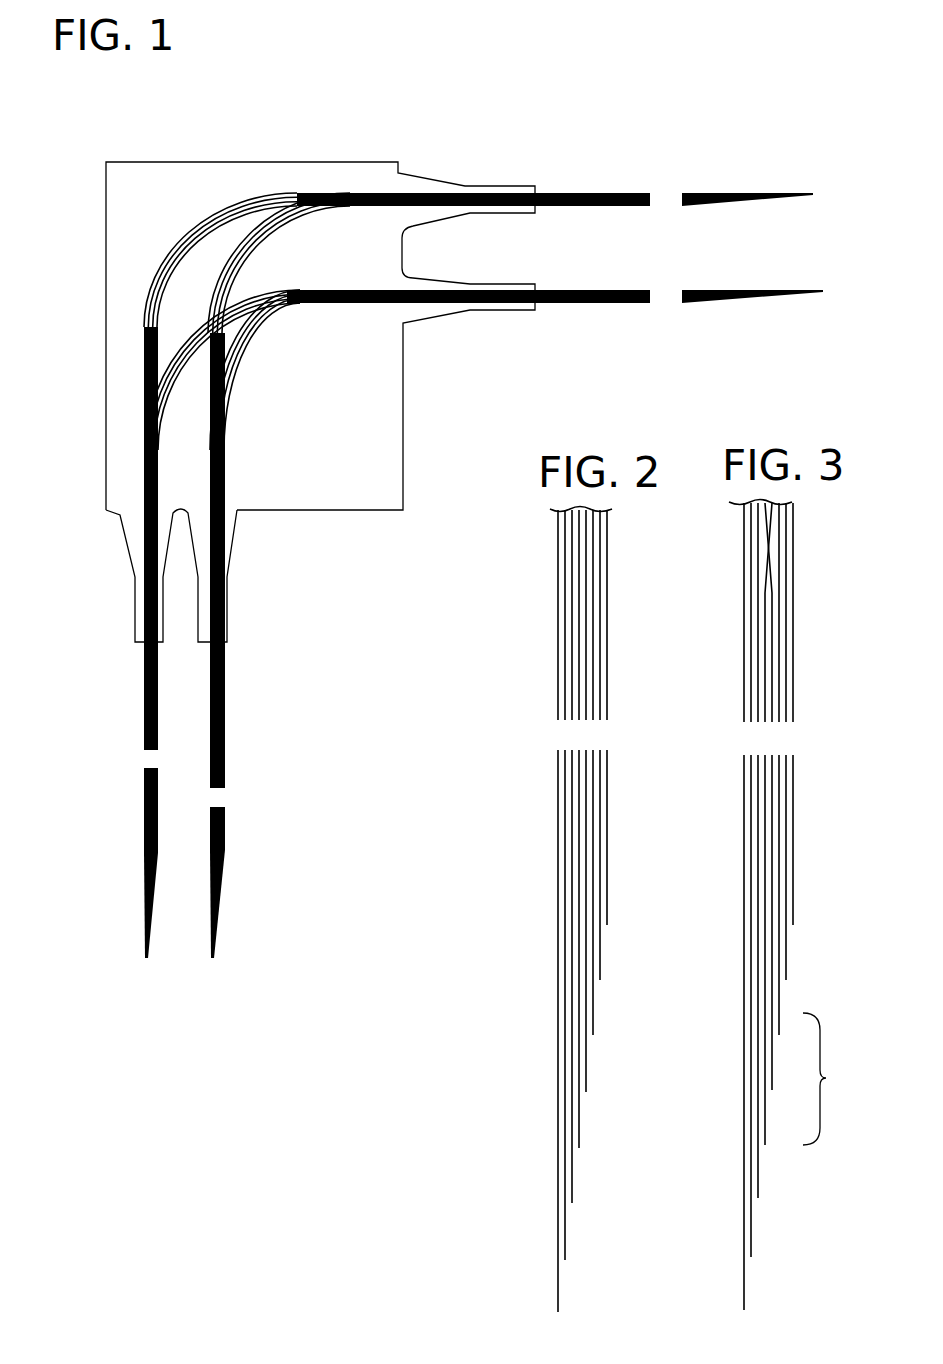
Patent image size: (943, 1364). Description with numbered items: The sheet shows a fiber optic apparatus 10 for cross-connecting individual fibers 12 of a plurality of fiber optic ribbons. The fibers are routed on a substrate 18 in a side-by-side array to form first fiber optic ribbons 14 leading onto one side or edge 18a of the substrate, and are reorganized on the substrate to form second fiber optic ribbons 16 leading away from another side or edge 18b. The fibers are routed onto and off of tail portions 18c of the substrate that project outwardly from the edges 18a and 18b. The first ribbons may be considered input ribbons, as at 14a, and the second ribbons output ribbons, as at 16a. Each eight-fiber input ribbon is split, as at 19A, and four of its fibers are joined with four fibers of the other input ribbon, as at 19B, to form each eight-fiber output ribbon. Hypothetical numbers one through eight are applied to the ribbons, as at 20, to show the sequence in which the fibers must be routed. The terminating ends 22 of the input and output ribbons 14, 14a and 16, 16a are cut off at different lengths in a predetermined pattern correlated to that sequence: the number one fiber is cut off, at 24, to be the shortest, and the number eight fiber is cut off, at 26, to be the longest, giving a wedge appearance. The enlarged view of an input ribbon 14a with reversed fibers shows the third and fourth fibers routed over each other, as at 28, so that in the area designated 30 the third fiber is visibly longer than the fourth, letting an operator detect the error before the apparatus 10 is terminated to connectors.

In FIG. 1, the fiber optic apparatus 10 is at (240, 136).
In FIG. 1, the individual fibers 12 is at (238, 262).
In FIG. 2, the individual fibers 12 is at (588, 590).
In FIG. 3, the individual fibers 12 is at (768, 503).
In FIG. 1, the first fiber optic ribbons 14 is at (207, 543).
In FIG. 1, the input ribbons 14a is at (208, 700).
In FIG. 2, the input ribbons 14a is at (604, 625).
In FIG. 3, the input ribbons 14a is at (788, 540).
In FIG. 1, the second fiber optic ribbons 16 is at (427, 293).
In FIG. 1, the output ribbons 16a is at (587, 290).
In FIG. 1, the substrate 18 is at (357, 462).
In FIG. 1, the side or edge of the substrate 18a is at (303, 512).
In FIG. 1, the another side or edge of the substrate 18b is at (405, 430).
In FIG. 1, the tail portions of the substrate 18c is at (479, 186).
In FIG. 1, the split of the input ribbons 19A is at (142, 453).
In FIG. 1, the joining of ribbon halves 19B is at (323, 297).
In FIG. 1, the hypothetical fiber numbers 20 is at (660, 160).
In FIG. 2, the hypothetical fiber numbers 20 is at (535, 733).
In FIG. 3, the hypothetical fiber numbers 20 is at (820, 742).
In FIG. 1, the terminating ends 22 is at (762, 203).
In FIG. 2, the terminating ends 22 is at (590, 1158).
In FIG. 3, the terminating ends 22 is at (768, 1207).
In FIG. 2, the cut-off of the number one fiber 24 is at (607, 925).
In FIG. 3, the cut-off of the number one fiber 24 is at (793, 925).
In FIG. 2, the cut-off of the number eight fiber 26 is at (558, 1312).
In FIG. 3, the cut-off of the number eight fiber 26 is at (744, 1310).
In FIG. 3, the reversed fibers 28 is at (782, 567).
In FIG. 3, the area of the wedge-shaped pattern 30 is at (838, 1079).